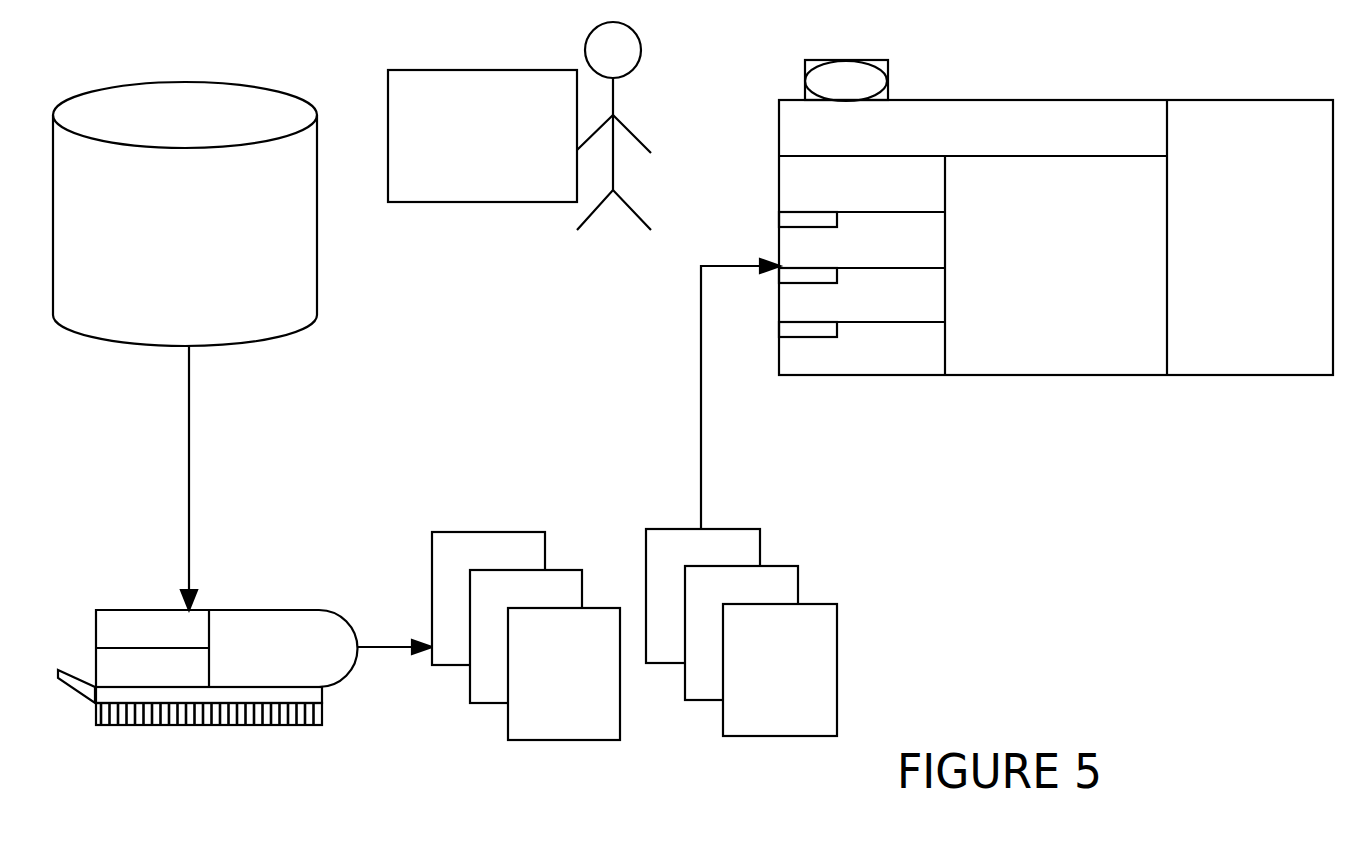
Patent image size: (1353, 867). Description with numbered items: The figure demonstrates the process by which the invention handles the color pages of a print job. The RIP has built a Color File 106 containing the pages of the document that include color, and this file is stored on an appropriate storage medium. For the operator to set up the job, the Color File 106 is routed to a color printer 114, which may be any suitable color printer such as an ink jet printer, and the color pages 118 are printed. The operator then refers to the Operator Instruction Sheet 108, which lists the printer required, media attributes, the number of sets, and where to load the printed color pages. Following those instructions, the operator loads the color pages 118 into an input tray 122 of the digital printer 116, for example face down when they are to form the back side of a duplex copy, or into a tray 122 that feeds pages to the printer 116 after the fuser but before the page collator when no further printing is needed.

The Color File 106 is at (237, 82).
The Operator Instruction Sheet 108 is at (483, 69).
The color printer 114 is at (270, 609).
The digital printer 116 is at (1059, 234).
The color pages 118 is at (762, 566).
The input tray 122 is at (898, 358).